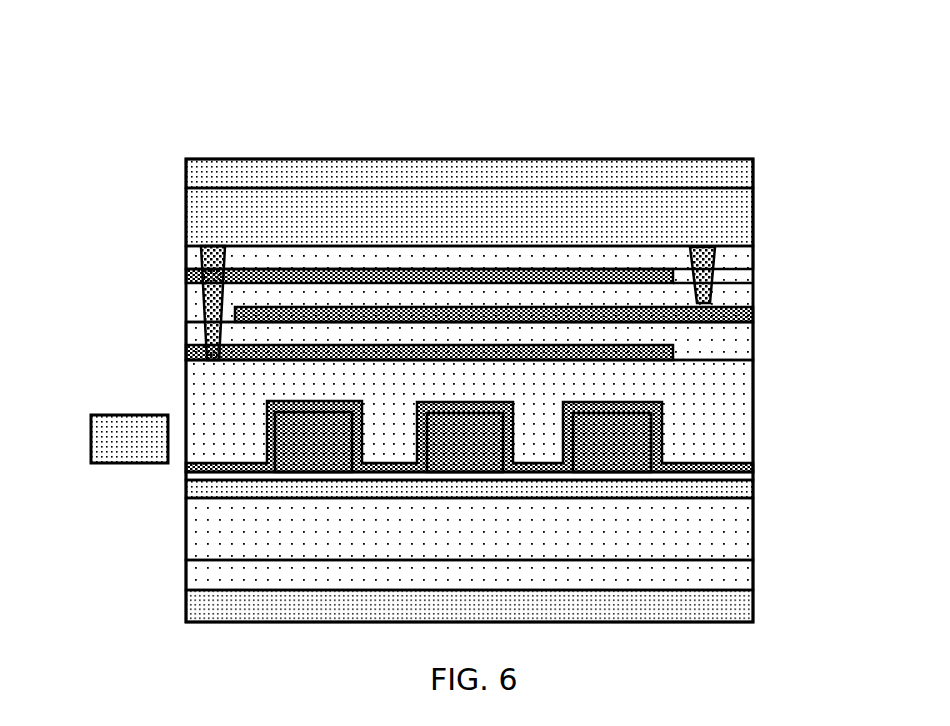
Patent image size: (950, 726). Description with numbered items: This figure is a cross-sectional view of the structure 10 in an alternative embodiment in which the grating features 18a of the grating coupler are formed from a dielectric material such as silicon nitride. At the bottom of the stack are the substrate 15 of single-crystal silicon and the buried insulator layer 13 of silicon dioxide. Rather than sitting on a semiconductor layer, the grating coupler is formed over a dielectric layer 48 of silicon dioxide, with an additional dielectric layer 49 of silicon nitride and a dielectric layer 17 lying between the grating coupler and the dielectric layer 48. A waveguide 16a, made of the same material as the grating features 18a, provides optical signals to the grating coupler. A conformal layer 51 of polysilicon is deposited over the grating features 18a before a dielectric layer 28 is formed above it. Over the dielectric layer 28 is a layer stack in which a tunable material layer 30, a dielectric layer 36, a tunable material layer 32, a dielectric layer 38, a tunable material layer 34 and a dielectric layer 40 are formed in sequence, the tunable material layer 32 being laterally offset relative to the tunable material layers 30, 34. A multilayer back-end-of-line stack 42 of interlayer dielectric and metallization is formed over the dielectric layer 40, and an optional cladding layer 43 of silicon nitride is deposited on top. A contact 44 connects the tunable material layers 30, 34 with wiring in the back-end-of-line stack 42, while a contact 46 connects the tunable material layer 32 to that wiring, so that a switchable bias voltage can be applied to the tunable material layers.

The structure 10 is at (118, 86).
The buried insulator layer 13 is at (735, 582).
The substrate 15 is at (735, 606).
The waveguide 16a is at (108, 433).
The dielectric layer 17 is at (737, 478).
The grating features 18a is at (323, 435).
The dielectric layer 28 is at (718, 386).
The tunable material layer 30 is at (195, 356).
The tunable material layer 32 is at (728, 317).
The tunable material layer 34 is at (195, 278).
The dielectric layer 36 is at (730, 350).
The dielectric layer 38 is at (195, 310).
The dielectric layer 40 is at (727, 273).
The back-end-of-line stack 42 is at (735, 222).
The cladding layer 43 is at (731, 172).
The contact 44 is at (213, 268).
The contact 46 is at (702, 260).
The dielectric layer 48 is at (730, 534).
The additional dielectric layer 49 is at (200, 491).
The conformal layer 51 is at (655, 440).